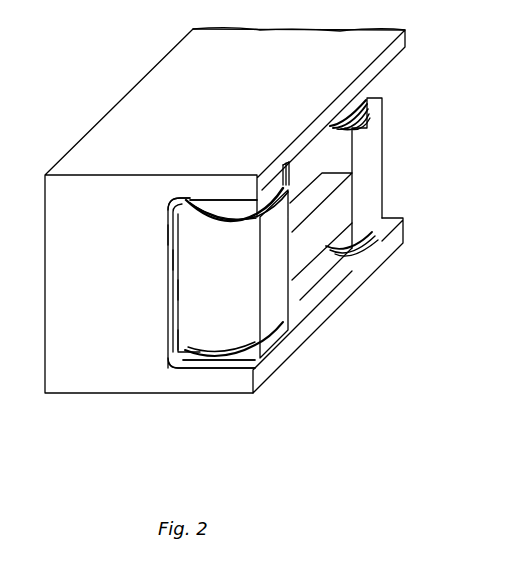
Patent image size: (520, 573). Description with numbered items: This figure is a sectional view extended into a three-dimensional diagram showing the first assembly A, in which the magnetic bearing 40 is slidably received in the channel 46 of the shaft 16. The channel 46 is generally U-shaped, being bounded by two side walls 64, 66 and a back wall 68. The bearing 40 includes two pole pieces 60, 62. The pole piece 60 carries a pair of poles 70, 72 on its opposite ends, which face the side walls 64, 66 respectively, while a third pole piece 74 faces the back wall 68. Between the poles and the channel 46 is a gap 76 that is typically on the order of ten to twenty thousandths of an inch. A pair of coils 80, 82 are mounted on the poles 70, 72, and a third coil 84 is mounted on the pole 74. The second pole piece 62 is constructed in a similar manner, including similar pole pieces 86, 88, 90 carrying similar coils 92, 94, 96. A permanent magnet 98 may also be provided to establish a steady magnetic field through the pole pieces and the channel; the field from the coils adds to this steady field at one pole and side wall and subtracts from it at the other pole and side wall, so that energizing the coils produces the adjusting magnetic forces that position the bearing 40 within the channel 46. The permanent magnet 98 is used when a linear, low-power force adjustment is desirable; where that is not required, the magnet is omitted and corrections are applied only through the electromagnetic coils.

The first assembly A is at (84, 66).
The shaft 16 is at (244, 82).
The magnetic bearing 40 is at (428, 180).
The channel 46 is at (166, 234).
The pole piece 60 is at (234, 304).
The second pole piece 62 is at (383, 139).
The side wall 64 is at (200, 372).
The side wall 66 is at (243, 200).
The back wall 68 is at (168, 262).
The pole 70 is at (213, 372).
The pole 72 is at (217, 200).
The third pole piece 74 is at (168, 292).
The gap 76 is at (190, 198).
The coil 80 is at (215, 352).
The coil 82 is at (219, 222).
The third coil 84 is at (186, 290).
The pole piece 86 is at (330, 277).
The pole piece 88 is at (354, 112).
The pole piece 90 is at (284, 170).
The coil 92 is at (345, 250).
The coil 94 is at (370, 100).
The coil 96 is at (292, 180).
The permanent magnet 98 is at (334, 239).